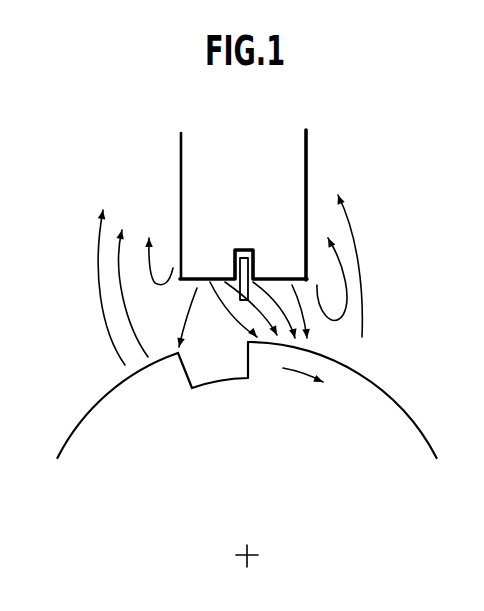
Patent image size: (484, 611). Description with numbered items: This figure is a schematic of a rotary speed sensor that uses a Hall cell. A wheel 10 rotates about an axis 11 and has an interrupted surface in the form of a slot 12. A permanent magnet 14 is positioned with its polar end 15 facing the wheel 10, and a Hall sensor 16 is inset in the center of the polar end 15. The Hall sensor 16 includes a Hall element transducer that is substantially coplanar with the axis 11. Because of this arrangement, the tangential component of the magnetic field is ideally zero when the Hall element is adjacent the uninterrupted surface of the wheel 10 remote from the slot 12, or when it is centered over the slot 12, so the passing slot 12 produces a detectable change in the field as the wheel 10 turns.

The wheel 10 is at (407, 413).
The axis 11 is at (250, 553).
The slot 12 is at (186, 384).
The permanent magnet 14 is at (308, 155).
The polar end 15 is at (277, 277).
The Hall sensor 16 is at (236, 262).